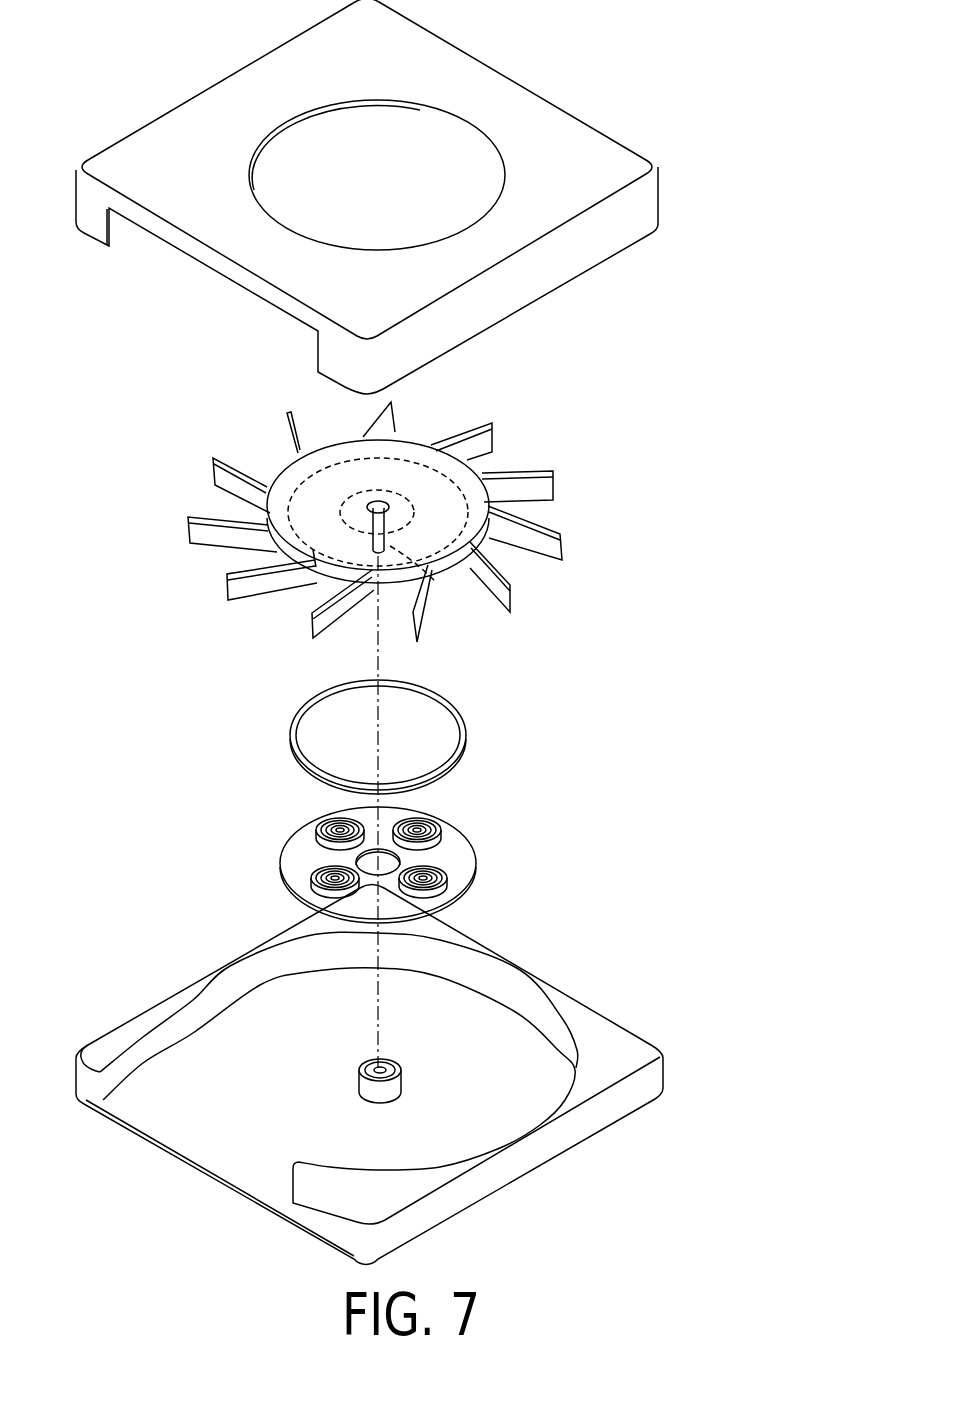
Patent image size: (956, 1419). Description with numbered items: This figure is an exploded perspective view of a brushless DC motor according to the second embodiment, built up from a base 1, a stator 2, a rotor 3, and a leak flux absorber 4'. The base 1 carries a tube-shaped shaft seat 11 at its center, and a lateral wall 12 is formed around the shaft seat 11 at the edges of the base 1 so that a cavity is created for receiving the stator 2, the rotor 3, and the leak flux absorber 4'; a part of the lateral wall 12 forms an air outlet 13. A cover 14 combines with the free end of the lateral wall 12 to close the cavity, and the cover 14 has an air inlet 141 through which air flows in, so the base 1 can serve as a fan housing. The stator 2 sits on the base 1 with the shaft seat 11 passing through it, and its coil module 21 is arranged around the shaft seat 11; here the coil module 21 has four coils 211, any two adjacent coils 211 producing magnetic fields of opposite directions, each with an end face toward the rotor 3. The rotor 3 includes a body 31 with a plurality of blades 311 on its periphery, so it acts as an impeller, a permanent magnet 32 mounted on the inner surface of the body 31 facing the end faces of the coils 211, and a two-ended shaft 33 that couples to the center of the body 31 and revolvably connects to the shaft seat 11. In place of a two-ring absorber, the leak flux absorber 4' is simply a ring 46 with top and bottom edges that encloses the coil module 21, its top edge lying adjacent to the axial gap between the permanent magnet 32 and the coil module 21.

The base 1 is at (352, 1075).
The shaft seat 11 is at (362, 1086).
The lateral wall 12 is at (412, 1192).
The air outlet 13 is at (195, 1143).
The cover 14 is at (367, 197).
The air inlet 141 is at (455, 143).
The stator 2 is at (432, 850).
The coil module 21 is at (466, 858).
The coils 211 is at (443, 827).
The rotor 3 is at (390, 504).
The body 31 is at (330, 455).
The blades 311 is at (522, 476).
The permanent magnet 32 is at (438, 493).
The shaft 33 is at (436, 582).
The leak flux absorber 4' is at (423, 734).
The ring 46 is at (466, 741).